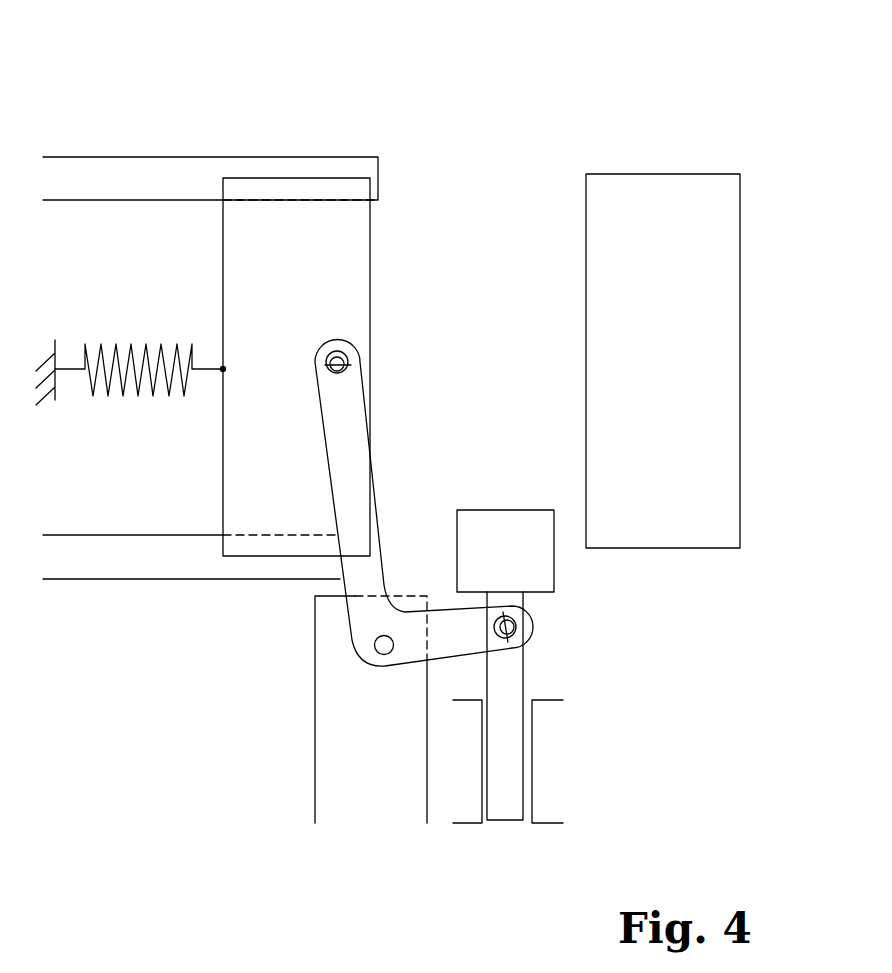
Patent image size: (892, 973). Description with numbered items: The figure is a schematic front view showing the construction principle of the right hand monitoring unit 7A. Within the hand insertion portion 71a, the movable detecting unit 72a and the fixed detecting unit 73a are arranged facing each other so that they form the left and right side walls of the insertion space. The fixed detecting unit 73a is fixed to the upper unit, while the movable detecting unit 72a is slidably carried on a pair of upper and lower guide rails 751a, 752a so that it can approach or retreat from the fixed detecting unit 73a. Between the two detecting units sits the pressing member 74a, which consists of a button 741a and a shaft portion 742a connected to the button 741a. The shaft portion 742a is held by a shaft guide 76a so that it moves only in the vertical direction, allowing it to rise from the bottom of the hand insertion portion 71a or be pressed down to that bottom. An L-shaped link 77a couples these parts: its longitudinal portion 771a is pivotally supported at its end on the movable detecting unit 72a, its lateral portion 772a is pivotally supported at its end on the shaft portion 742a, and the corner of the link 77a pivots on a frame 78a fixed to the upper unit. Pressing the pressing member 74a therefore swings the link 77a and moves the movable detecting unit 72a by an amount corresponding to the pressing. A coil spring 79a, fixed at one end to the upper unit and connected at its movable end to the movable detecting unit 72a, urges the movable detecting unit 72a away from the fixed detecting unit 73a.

The hand monitoring unit 7A is at (93, 63).
The hand insertion portion 71a is at (476, 182).
The movable detecting unit 72a is at (328, 251).
The fixed detecting unit 73a is at (692, 204).
The pressing member 74a is at (567, 598).
The button 741a is at (501, 525).
The shaft portion 742a is at (503, 668).
The upper guide rail 751a is at (150, 163).
The lower guide rail 752a is at (113, 563).
The shaft guide 76a is at (462, 805).
The L-shaped link 77a is at (390, 446).
The longitudinal portion 771a is at (350, 493).
The lateral portion 772a is at (458, 628).
The frame 78a is at (345, 765).
The coil spring 79a is at (135, 330).